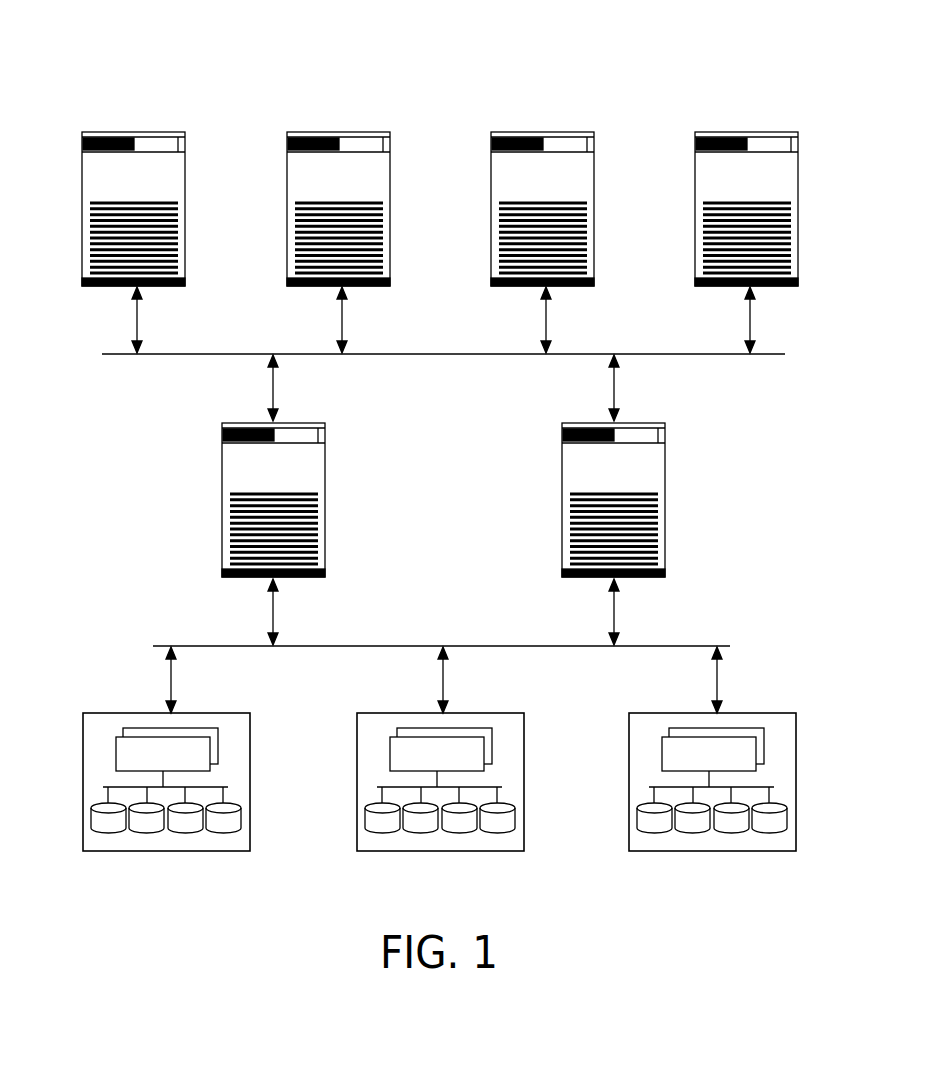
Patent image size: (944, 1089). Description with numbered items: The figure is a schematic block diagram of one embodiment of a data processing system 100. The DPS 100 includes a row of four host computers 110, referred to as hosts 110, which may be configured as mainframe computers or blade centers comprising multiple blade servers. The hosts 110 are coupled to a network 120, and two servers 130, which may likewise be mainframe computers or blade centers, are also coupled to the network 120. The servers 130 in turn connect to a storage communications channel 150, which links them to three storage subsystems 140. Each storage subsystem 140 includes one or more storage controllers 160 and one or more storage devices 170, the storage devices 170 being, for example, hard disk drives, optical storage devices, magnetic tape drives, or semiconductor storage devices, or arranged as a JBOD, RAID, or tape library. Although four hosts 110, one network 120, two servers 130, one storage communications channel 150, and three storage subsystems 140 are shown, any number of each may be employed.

The data processing system 100 is at (94, 61).
The host computer 110 is at (186, 132).
The network 120 is at (441, 353).
The server 130 is at (326, 423).
The storage subsystem 140 is at (250, 713).
The storage communications channel 150 is at (373, 645).
The storage controller 160 is at (116, 752).
The storage device 170 is at (92, 818).